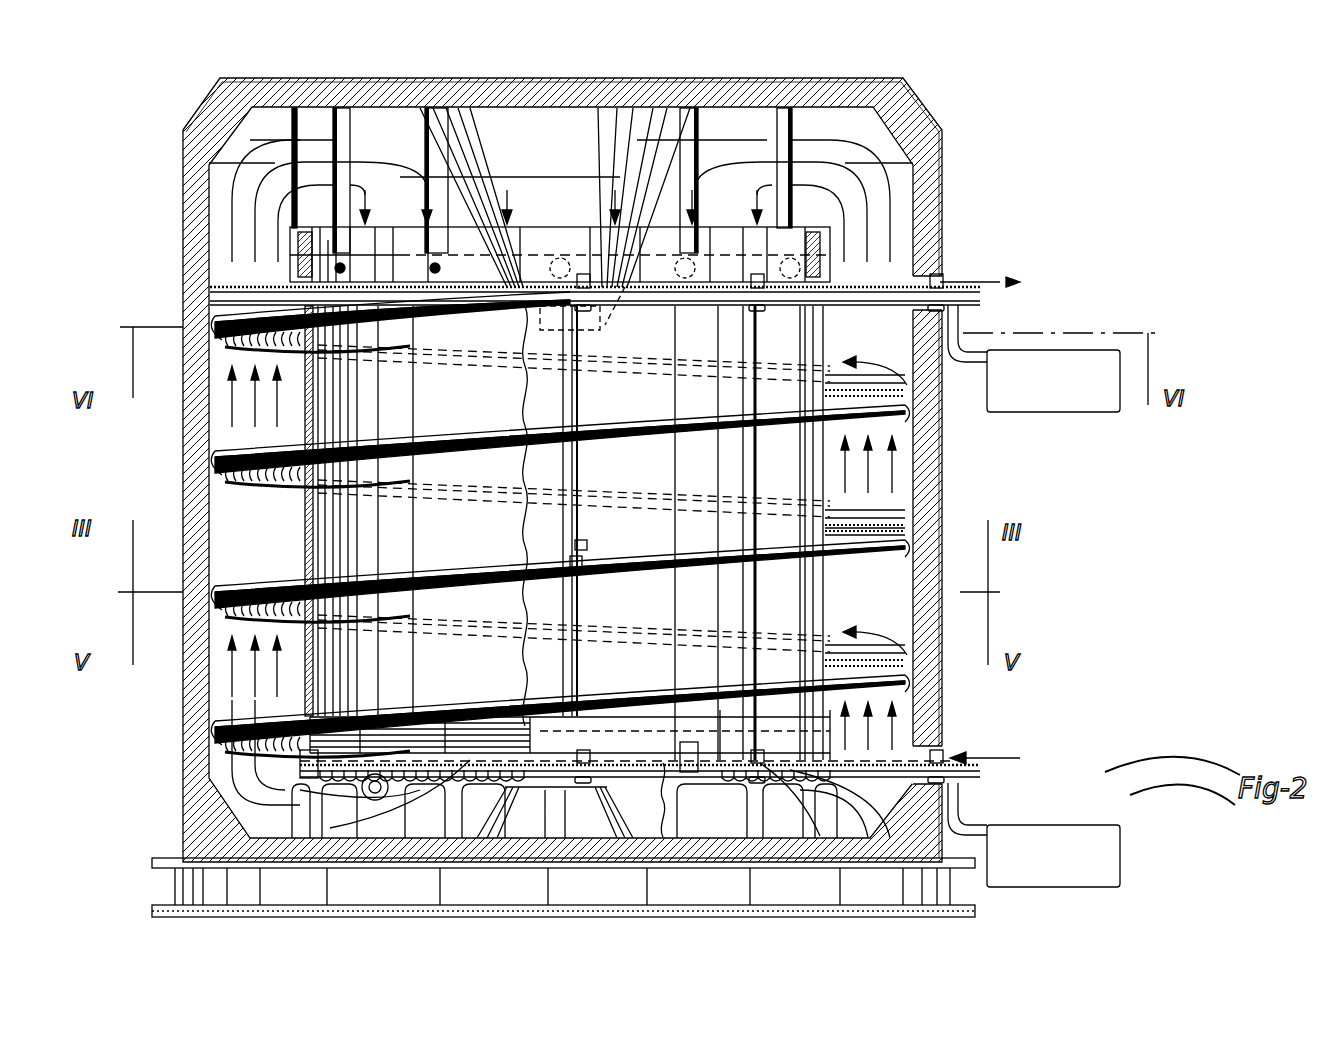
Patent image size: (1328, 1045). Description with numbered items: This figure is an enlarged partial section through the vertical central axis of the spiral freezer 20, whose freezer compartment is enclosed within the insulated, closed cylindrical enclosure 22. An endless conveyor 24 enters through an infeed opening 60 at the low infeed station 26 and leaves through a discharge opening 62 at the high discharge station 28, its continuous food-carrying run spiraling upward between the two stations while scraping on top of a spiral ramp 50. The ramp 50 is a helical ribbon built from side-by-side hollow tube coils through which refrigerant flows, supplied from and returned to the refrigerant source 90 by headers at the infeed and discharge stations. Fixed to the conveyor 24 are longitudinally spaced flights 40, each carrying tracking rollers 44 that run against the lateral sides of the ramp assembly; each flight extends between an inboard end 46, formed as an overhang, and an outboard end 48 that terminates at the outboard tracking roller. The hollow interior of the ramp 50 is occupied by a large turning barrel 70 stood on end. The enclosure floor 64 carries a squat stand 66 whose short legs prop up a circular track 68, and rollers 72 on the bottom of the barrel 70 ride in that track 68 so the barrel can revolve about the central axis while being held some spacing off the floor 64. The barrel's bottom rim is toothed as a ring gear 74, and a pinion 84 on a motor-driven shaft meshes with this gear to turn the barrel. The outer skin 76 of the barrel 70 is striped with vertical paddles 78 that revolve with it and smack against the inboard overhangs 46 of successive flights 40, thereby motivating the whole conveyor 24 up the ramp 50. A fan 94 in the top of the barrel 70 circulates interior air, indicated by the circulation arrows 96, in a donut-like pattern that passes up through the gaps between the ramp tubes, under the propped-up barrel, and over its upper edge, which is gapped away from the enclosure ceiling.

The spiral freezer 20 is at (331, 54).
The enclosure 22 is at (586, 80).
The conveyor belt 24 is at (288, 572).
The infeed station 26 is at (691, 742).
The discharge station 28 is at (646, 269).
The flights 40 is at (586, 548).
The tracking rollers 44 is at (588, 578).
The inboard end 46 is at (820, 532).
The outboard end 48 is at (892, 533).
The spiral ramp 50 is at (278, 490).
The infeed opening 60 is at (954, 748).
The discharge opening 62 is at (897, 286).
The floor 64 is at (428, 864).
The squat stand 66 is at (292, 813).
The circular track 68 is at (830, 768).
The turning barrel 70 is at (719, 232).
The rollers 72 is at (300, 282).
The ring gear 74 is at (492, 788).
The outer skin 76 is at (636, 480).
The paddles 78 is at (572, 546).
The pinion 84 is at (383, 806).
The refrigerant source 90 is at (1044, 412).
The fan 94 is at (650, 730).
The air circulation arrows 96 is at (816, 146).